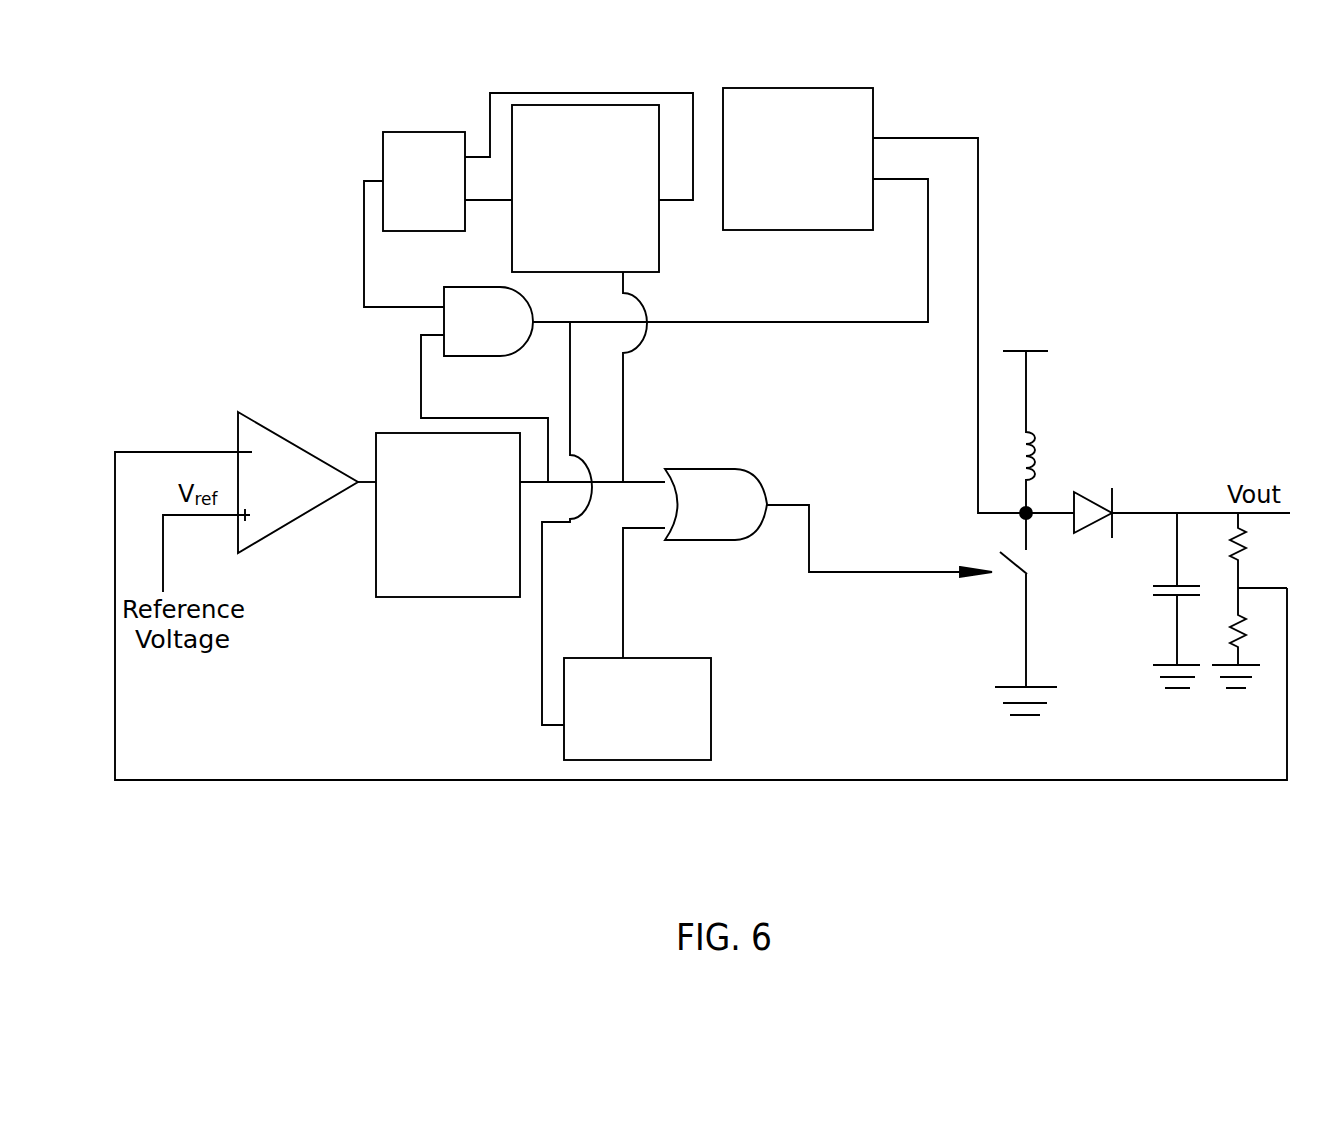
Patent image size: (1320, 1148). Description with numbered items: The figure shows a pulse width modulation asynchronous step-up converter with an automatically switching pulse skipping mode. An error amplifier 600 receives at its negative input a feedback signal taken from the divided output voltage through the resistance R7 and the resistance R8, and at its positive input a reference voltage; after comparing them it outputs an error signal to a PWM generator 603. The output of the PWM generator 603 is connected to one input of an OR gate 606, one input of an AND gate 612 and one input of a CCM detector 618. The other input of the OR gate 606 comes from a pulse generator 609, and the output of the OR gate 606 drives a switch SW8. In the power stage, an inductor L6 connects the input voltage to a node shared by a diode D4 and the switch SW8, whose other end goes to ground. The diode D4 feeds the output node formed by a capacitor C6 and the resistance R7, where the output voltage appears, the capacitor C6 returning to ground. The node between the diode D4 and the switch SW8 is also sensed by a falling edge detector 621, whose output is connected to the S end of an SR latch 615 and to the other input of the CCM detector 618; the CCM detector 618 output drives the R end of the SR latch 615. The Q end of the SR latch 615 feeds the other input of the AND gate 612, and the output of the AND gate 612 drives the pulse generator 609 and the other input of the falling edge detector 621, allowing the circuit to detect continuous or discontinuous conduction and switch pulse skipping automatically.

The error amplifier 600 is at (277, 434).
The PWM generator 603 is at (470, 593).
The OR gate 606 is at (698, 538).
The pulse generator 609 is at (658, 753).
The AND gate 612 is at (505, 353).
The SR latch 615 is at (420, 132).
The CCM detector 618 is at (563, 265).
The falling edge detector 621 is at (777, 218).
The inductor L6 is at (1021, 414).
The diode D4 is at (1158, 508).
The switch SW8 is at (1043, 614).
The capacitor C6 is at (1194, 600).
The resistance R7 is at (1257, 550).
The resistance R8 is at (1248, 638).